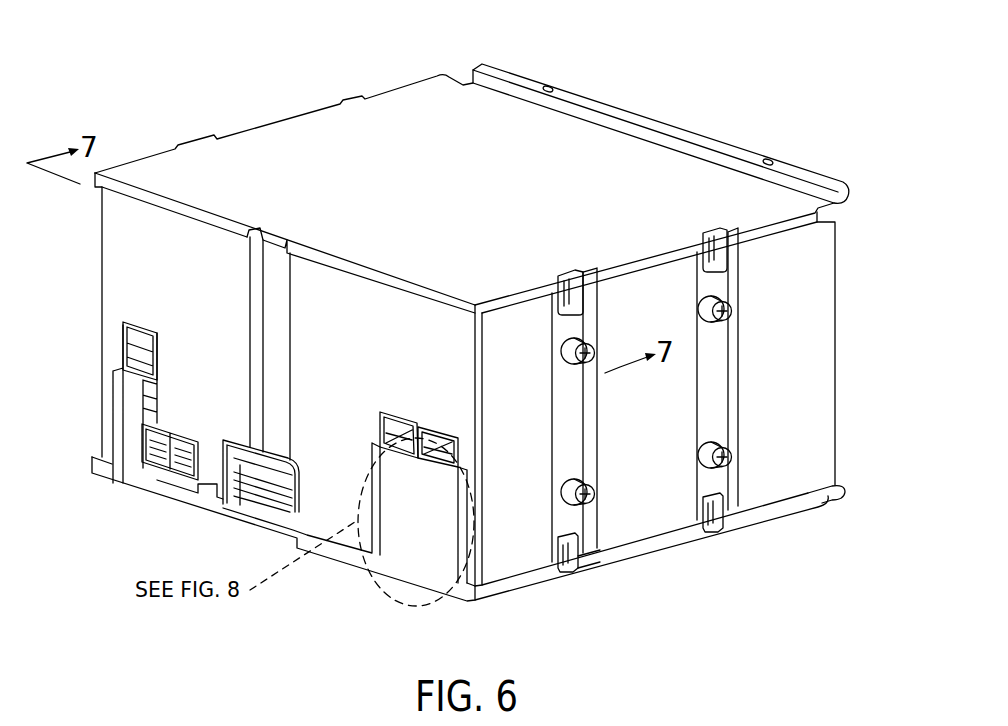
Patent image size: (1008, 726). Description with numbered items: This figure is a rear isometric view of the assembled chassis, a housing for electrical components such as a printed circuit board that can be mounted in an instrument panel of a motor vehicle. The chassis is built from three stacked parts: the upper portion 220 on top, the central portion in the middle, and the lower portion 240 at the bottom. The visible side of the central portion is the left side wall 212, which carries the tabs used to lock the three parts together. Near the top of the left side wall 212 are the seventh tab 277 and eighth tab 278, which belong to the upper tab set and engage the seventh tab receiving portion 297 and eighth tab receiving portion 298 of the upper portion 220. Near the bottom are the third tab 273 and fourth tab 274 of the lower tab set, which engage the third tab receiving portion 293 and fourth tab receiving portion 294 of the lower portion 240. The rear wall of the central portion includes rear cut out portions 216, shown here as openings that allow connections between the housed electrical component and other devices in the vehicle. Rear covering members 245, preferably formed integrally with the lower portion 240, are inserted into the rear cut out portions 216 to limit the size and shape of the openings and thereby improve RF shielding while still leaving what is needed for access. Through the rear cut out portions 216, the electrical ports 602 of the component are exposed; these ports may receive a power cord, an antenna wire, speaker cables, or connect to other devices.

The left side wall 212 is at (776, 379).
The rear cut out portions 216 is at (400, 407).
The upper portion 220 is at (388, 199).
The lower portion 240 is at (504, 599).
The rear covering members 245 is at (412, 532).
The third tab 273 is at (590, 544).
The fourth tab 274 is at (717, 512).
The seventh tab 277 is at (584, 298).
The eighth tab 278 is at (729, 254).
The third tab receiving portion 293 is at (556, 546).
The fourth tab receiving portion 294 is at (729, 500).
The seventh tab receiving portion 297 is at (556, 305).
The eighth tab receiving portion 298 is at (735, 266).
The electrical ports 602 is at (437, 440).